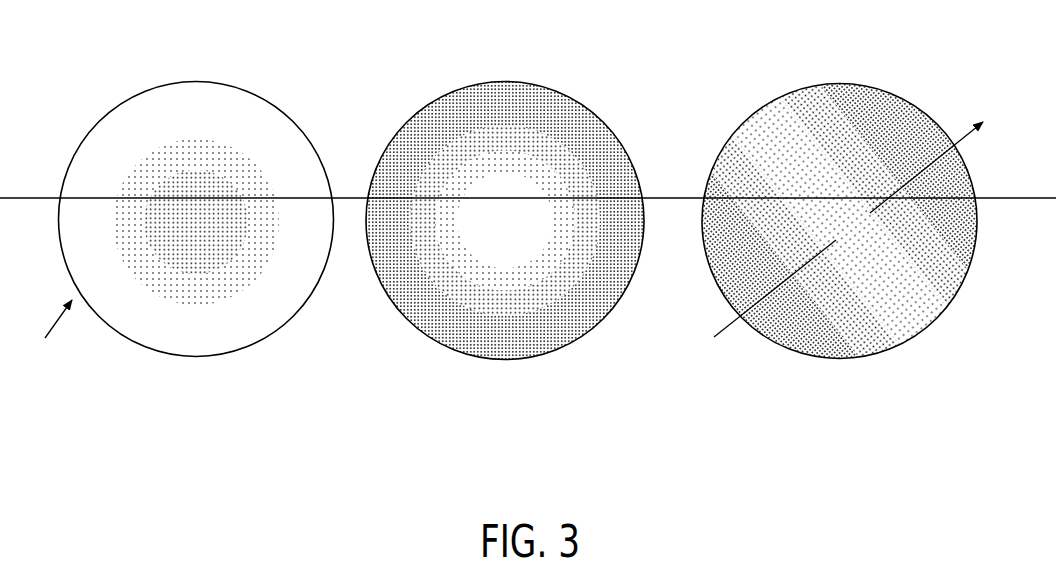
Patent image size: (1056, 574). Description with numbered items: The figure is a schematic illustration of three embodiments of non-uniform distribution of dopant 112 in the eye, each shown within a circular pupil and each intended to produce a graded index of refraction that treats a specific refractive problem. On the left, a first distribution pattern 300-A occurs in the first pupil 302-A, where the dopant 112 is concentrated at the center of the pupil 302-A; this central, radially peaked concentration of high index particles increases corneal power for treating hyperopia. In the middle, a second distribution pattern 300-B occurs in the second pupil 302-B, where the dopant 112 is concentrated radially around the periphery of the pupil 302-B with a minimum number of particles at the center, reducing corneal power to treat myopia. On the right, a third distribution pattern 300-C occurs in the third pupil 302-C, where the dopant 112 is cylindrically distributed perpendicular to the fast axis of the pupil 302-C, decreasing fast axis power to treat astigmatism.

The dopant 112 is at (160, 283).
The first distribution pattern 300-A is at (307, 87).
The second distribution pattern 300-B is at (620, 83).
The third distribution pattern 300-C is at (968, 85).
The first pupil 302-A is at (98, 126).
The second pupil 302-B is at (402, 128).
The third pupil 302-C is at (742, 126).